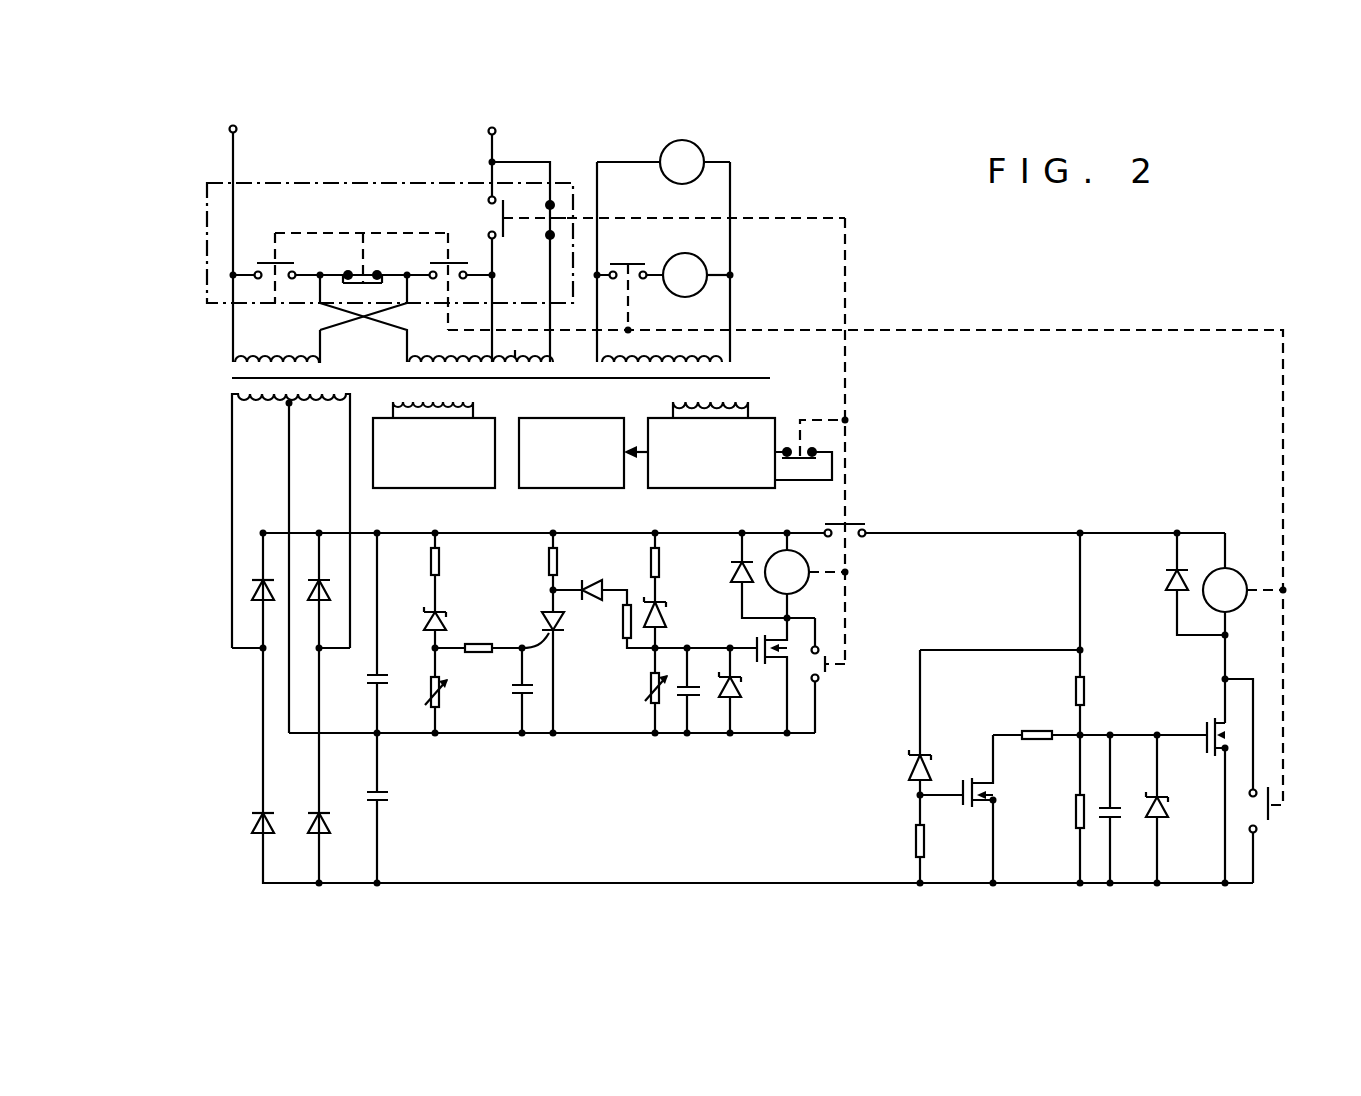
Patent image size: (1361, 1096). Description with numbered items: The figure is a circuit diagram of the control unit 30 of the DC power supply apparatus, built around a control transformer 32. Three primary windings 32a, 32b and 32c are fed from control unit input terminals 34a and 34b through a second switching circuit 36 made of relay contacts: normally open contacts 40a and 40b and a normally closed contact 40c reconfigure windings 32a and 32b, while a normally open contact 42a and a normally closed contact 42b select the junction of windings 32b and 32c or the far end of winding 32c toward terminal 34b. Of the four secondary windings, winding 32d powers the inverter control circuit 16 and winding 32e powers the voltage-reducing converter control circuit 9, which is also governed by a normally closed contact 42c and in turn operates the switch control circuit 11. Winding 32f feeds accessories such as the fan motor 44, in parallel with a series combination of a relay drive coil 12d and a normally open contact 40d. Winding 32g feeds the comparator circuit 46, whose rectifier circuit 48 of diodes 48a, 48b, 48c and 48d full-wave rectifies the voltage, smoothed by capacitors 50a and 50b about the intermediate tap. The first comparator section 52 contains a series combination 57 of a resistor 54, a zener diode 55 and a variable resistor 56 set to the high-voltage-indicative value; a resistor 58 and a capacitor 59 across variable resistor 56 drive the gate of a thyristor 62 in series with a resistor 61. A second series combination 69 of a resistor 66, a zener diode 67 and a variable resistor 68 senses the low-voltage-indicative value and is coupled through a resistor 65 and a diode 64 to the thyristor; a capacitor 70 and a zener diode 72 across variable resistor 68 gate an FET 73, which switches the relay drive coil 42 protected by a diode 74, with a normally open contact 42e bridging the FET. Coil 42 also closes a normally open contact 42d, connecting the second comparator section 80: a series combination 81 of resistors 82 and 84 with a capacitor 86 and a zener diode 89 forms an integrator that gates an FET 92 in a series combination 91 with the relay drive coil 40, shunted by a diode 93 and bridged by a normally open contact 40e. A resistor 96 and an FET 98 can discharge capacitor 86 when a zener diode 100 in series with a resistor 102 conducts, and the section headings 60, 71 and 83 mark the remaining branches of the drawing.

The control unit input terminal 34a is at (237, 128).
The control unit input terminal 34b is at (495, 131).
The second switching circuit 36 is at (399, 166).
The normally open contact 40a is at (258, 262).
The normally open contact 40b is at (463, 262).
The normally closed contact 40c is at (352, 270).
The normally open contact 40d is at (630, 262).
The normally open contact 40e is at (1268, 812).
The relay drive coil 40 is at (1238, 582).
The normally open contact 42a is at (503, 200).
The normally closed contact 42b is at (574, 215).
The normally closed contact 42c is at (808, 440).
The normally open contact 42d is at (855, 521).
The normally open contact 42e is at (806, 670).
The relay drive coil 42 is at (798, 583).
The motor 44 is at (696, 153).
The relay drive coil 12d is at (700, 265).
The control unit 30 is at (962, 314).
The control transformer 32 is at (222, 396).
The primary winding 32a is at (312, 347).
The primary winding 32b is at (412, 352).
The primary winding 32c is at (515, 352).
The secondary winding 32d is at (445, 410).
The secondary winding 32e is at (720, 410).
The secondary winding 32f is at (705, 352).
The secondary winding 32g is at (262, 410).
The inverter control circuit 16 is at (437, 488).
The switch control circuit 11 is at (567, 488).
The voltage-reducing converter control circuit 9 is at (707, 488).
The comparator circuit 46 is at (240, 744).
The rectifier circuit 48 is at (332, 517).
The diode 48a is at (266, 596).
The diode 48b is at (325, 600).
The diode 48c is at (258, 835).
The diode 48d is at (316, 835).
The smoothing capacitor 50a is at (386, 675).
The smoothing capacitor 50b is at (390, 794).
The first comparator section 52 is at (616, 784).
The resistor 54 is at (439, 570).
The zener diode 55 is at (443, 632).
The variable resistor 56 is at (441, 698).
The series combination 57 is at (450, 784).
The resistor 58 is at (482, 652).
The capacitor 59 is at (518, 689).
The trigger circuit 60 is at (522, 784).
The resistor 61 is at (549, 563).
The thyristor 62 is at (557, 622).
The diode 64 is at (596, 587).
The resistor 65 is at (622, 638).
The resistor 66 is at (662, 573).
The zener diode 67 is at (663, 625).
The variable resistor 68 is at (648, 688).
The series combination 69 is at (674, 784).
The capacitor 70 is at (700, 696).
The driver circuit 71 is at (717, 784).
The zener diode 72 is at (742, 690).
The FET 73 is at (798, 642).
The diode 74 is at (738, 590).
The second comparator section 80 is at (1128, 521).
The series combination 81 is at (1114, 629).
The resistor 82 is at (1086, 697).
The ground line 83 is at (936, 921).
The resistor 84 is at (1077, 820).
The capacitor 86 is at (1116, 820).
The zener diode 89 is at (1166, 820).
The series combination 91 is at (1262, 664).
The semiconductor switching device 92 is at (1212, 724).
The diode 93 is at (1175, 580).
The resistor 96 is at (1036, 733).
The semiconductor switching device 98 is at (990, 797).
The zener diode 100 is at (908, 768).
The resistor 102 is at (912, 838).